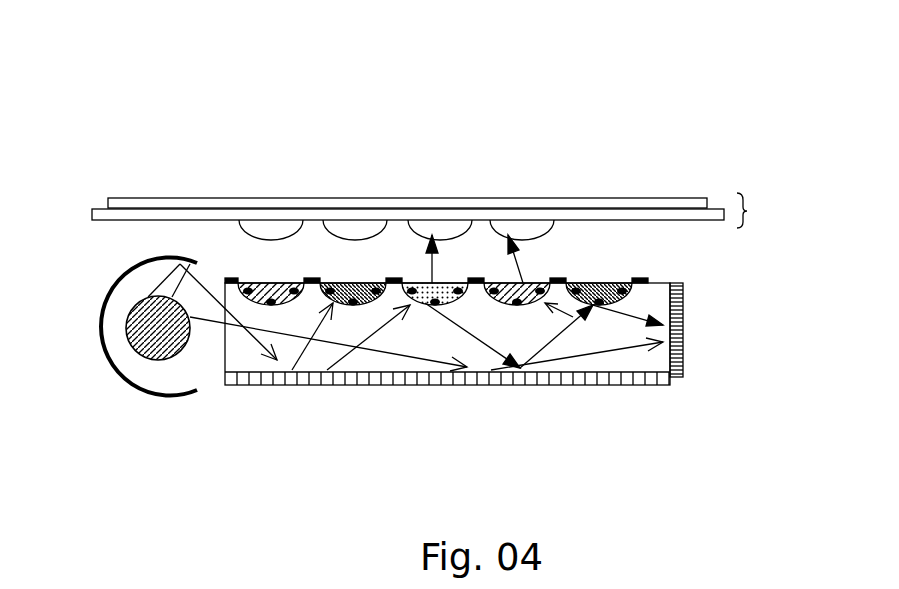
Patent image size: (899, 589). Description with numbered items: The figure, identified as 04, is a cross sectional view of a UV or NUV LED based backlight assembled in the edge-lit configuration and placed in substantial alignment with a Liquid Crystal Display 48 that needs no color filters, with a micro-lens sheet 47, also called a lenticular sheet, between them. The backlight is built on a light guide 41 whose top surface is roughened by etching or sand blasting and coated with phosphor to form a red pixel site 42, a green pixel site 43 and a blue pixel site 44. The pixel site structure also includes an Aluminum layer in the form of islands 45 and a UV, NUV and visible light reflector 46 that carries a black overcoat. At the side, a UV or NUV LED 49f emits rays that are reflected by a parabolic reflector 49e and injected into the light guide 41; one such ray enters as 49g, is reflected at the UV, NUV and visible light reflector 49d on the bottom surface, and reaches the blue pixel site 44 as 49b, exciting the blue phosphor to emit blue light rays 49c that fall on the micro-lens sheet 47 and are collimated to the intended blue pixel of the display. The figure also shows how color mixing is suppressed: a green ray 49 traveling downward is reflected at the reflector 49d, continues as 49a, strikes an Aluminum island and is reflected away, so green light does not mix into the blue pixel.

The lighting module 04 is at (512, 13).
The light guide 41 is at (655, 305).
The red pixel site 42 is at (262, 288).
The green pixel site 43 is at (430, 283).
The blue pixel site 44 is at (347, 290).
The Aluminum layer in the form of islands 45 is at (290, 290).
The UV, NUV and visible light reflector 46 is at (475, 283).
The micro-lens sheet 47 is at (534, 225).
The Liquid Crystal Display 48 is at (765, 201).
The ray 49 is at (477, 338).
The ray 49a is at (565, 347).
The ray 49b is at (313, 345).
The blue light rays 49c is at (353, 253).
The UV, NUV and visible light reflector 49d is at (685, 337).
The parabolic reflector 49e is at (127, 372).
The UV or NUV LED 49f is at (126, 332).
The ray 49g is at (247, 345).